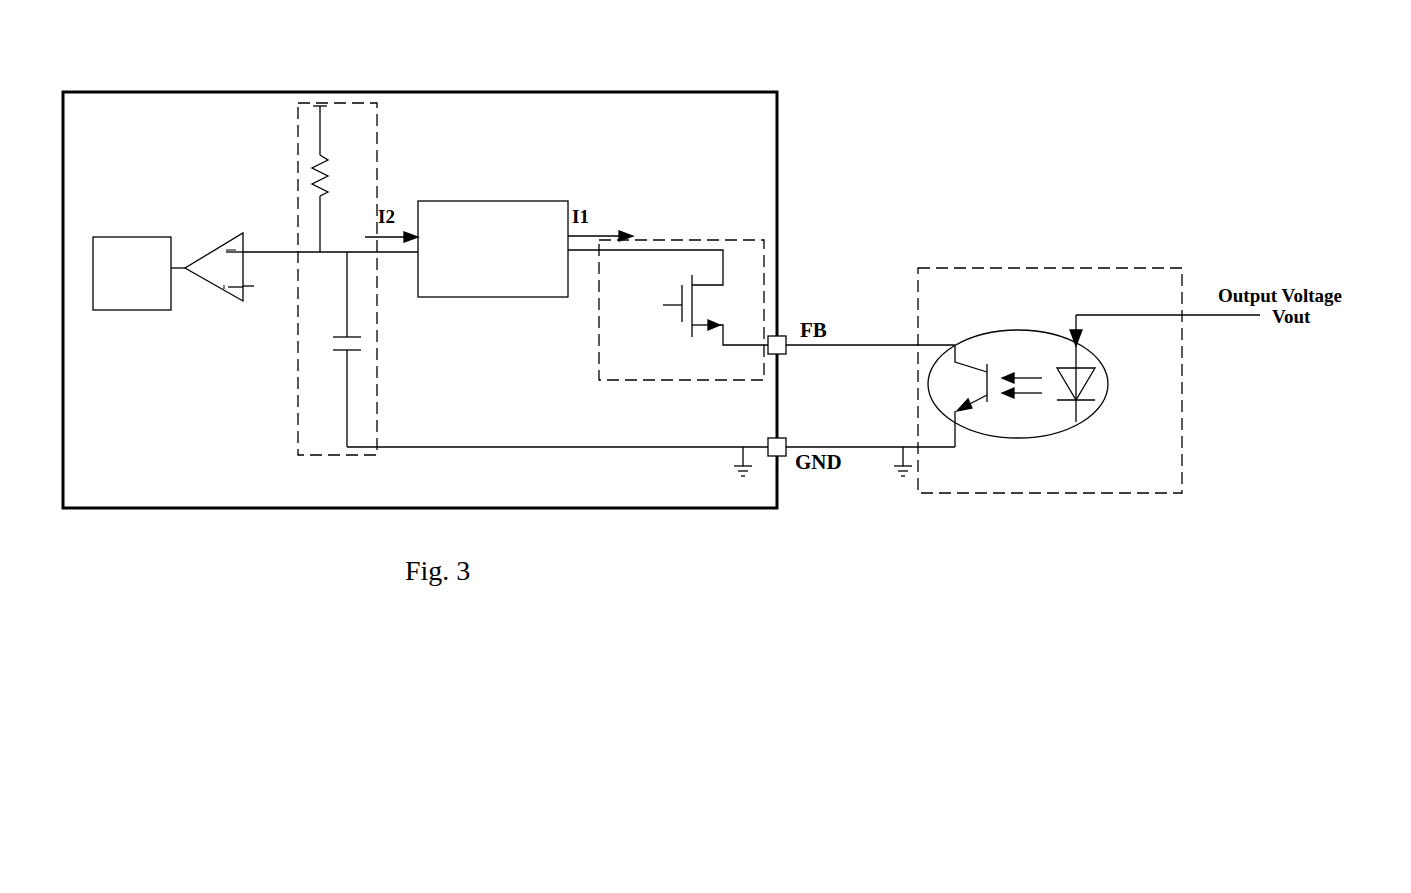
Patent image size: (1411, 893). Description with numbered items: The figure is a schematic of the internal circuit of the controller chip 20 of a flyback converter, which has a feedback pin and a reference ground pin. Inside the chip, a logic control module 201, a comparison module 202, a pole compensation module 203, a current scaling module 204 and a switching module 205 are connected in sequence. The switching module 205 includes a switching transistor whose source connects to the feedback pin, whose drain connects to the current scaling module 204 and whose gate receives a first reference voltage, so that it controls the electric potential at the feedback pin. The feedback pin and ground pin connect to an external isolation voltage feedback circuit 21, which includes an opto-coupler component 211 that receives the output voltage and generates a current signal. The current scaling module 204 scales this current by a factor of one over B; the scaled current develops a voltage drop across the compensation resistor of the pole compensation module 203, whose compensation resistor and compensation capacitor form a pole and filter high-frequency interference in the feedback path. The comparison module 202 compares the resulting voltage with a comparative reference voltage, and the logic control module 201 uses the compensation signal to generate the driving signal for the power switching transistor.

The controller chip 20 is at (598, 92).
The logic control module 201 is at (117, 237).
The comparison module 202 is at (207, 262).
The pole compensation module 203 is at (378, 125).
The current scaling module 204 is at (497, 205).
The switching module 205 is at (690, 240).
The isolation voltage feedback circuit 21 is at (1130, 268).
The opto-coupler component 211 is at (1100, 360).